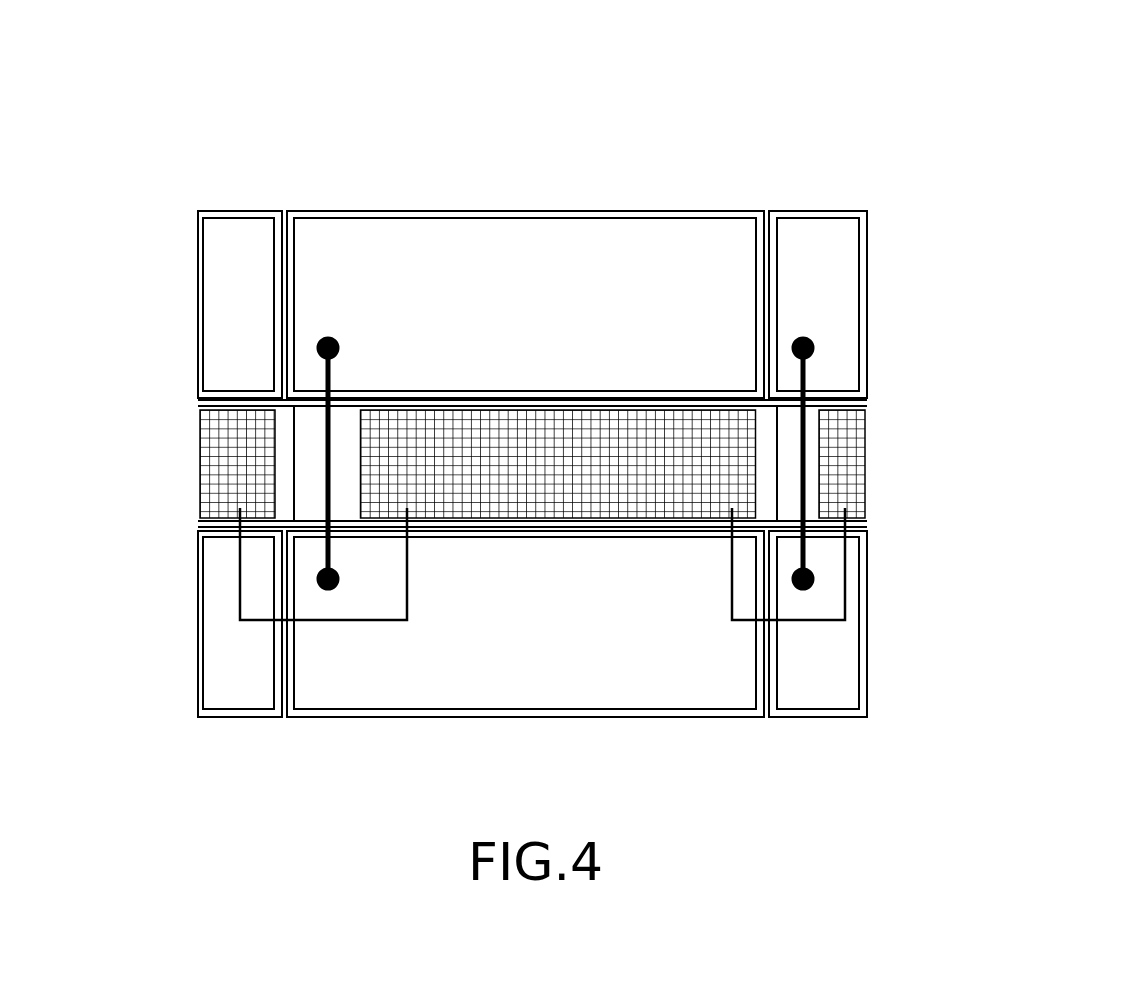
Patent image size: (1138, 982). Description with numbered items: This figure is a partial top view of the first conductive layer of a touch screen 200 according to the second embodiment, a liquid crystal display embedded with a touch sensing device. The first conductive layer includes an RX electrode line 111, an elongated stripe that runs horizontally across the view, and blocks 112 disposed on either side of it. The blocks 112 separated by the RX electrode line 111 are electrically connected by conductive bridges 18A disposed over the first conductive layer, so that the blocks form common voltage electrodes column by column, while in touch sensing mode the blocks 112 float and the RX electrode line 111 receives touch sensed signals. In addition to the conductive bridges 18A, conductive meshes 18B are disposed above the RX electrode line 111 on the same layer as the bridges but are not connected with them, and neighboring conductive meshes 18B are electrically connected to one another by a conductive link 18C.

The touch screen 200 is at (90, 77).
The block 112 is at (568, 233).
The RX electrode line 111 is at (877, 410).
The conductive bridge 18A is at (333, 372).
The conductive mesh 18B is at (203, 465).
The conductive link 18C is at (240, 582).